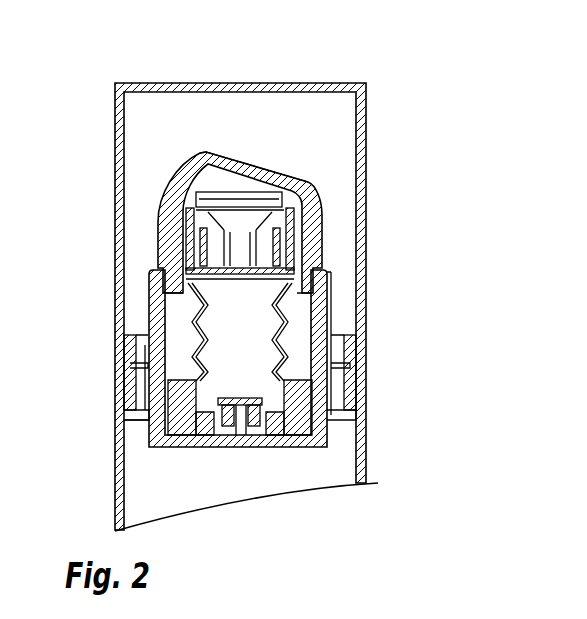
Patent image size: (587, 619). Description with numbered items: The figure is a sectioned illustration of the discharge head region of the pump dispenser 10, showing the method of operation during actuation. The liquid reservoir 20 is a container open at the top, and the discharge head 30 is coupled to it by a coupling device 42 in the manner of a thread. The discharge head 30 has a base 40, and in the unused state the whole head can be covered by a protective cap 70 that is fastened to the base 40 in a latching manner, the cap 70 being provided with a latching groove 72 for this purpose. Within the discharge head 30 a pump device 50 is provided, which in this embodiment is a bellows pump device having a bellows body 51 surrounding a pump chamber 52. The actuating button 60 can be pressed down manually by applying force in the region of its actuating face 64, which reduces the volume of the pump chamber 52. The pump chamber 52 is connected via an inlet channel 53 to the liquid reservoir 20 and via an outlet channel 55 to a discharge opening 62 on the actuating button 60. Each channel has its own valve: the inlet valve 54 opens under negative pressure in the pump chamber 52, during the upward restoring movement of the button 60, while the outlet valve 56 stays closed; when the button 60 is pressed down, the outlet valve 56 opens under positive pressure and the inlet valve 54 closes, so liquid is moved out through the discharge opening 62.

The pump dispenser 10 is at (0, 237).
The liquid reservoir 20 is at (145, 466).
The discharge head 30 is at (340, 315).
The base 40 is at (142, 343).
The coupling device 42 is at (128, 390).
The pump device 50 is at (290, 340).
The bellows body 51 is at (315, 273).
The pump chamber 52 is at (250, 344).
The inlet channel 53 is at (235, 428).
The inlet valve 54 is at (247, 412).
The outlet channel 55 is at (247, 245).
The outlet valve 56 is at (237, 267).
The actuating button 60 is at (159, 200).
The discharge opening 62 is at (197, 167).
The actuating face 64 is at (267, 167).
The protective cap 70 is at (0, 42).
The latching groove 72 is at (346, 343).